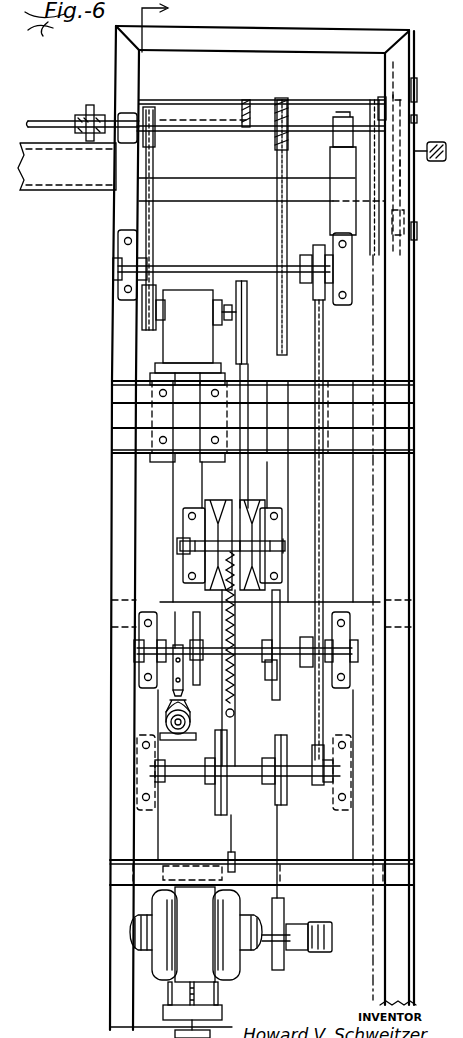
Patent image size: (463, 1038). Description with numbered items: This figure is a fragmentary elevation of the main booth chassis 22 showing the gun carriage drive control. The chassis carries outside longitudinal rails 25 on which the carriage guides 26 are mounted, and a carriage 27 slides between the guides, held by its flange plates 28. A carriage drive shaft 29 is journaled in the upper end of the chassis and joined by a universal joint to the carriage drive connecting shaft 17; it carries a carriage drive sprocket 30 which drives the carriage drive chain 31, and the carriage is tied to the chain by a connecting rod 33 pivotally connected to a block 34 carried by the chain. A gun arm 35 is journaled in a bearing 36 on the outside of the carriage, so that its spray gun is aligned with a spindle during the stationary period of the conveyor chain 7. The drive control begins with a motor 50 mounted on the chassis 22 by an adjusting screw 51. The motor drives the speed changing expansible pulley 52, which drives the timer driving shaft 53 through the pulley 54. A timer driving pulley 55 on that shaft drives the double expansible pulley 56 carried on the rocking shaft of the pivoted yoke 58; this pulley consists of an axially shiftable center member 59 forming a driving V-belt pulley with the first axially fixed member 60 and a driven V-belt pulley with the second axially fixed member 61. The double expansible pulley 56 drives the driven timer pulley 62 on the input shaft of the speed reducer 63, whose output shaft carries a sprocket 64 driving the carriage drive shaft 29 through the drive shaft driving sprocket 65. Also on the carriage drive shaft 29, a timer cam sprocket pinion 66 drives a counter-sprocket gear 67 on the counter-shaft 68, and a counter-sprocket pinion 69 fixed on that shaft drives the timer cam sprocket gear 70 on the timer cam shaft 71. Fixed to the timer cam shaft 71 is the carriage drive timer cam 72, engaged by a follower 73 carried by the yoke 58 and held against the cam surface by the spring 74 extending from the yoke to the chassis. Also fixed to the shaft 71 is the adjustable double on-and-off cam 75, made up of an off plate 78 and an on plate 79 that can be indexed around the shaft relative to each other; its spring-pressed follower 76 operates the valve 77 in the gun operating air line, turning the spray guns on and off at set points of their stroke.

The chain 7 is at (163, 26).
The carriage drive connecting shaft 17 is at (38, 119).
The chassis 22 is at (120, 393).
The outside longitudinal rails 25 is at (396, 486).
The carriage guides 26 is at (412, 314).
The carriage 27 is at (417, 118).
The flange plates 28 is at (430, 246).
The carriage drive shaft 29 is at (193, 131).
The carriage drive sprocket 30 is at (357, 140).
The carriage drive chain 31 is at (368, 219).
The connecting rod 33 is at (394, 175).
The block 34 is at (383, 98).
The gun arm 35 is at (416, 172).
The bearing 36 is at (437, 142).
The motor 50 is at (232, 968).
The adjusting screw 51 is at (222, 995).
The speed changing expansible pulley 52 is at (298, 932).
The timer driving shaft 53 is at (298, 778).
The pulley 54 is at (288, 802).
The timer driving pulley 55 is at (211, 802).
The double expansible pulley 56 is at (266, 527).
The pivoted yoke 58 is at (190, 556).
The axially shiftable center member 59 is at (230, 505).
The first axially fixed member 60 is at (203, 520).
The second axially fixed member 61 is at (253, 520).
The driven timer pulley 62 is at (248, 352).
The speed reducer 63 is at (168, 336).
The sprocket 64 is at (142, 318).
The drive shaft driving sprocket 65 is at (157, 138).
The timer cam sprocket pinion 66 is at (268, 146).
The counter-sprocket gear 67 is at (275, 222).
The counter-shaft 68 is at (195, 265).
The counter-sprocket pinion 69 is at (314, 290).
The timer cam sprocket gear 70 is at (324, 585).
The timer cam shaft 71 is at (291, 657).
The carriage drive timer cam 72 is at (272, 681).
The follower 73 is at (281, 616).
The spring 74 is at (235, 718).
The adjustable double on and off cam 75 is at (192, 618).
The spring-pressed follower 76 is at (172, 674).
The valve 77 is at (166, 722).
The off plate 78 is at (197, 685).
The on plate 79 is at (191, 716).